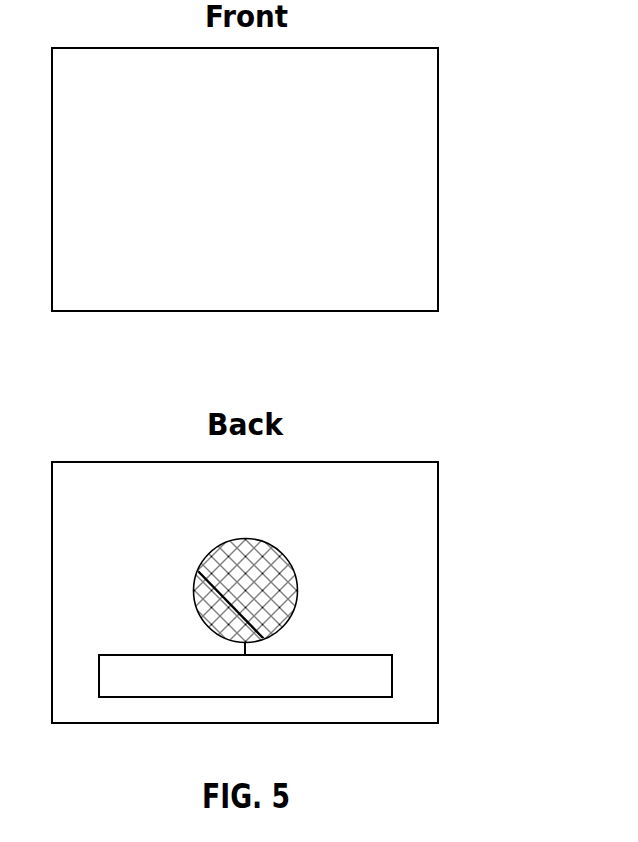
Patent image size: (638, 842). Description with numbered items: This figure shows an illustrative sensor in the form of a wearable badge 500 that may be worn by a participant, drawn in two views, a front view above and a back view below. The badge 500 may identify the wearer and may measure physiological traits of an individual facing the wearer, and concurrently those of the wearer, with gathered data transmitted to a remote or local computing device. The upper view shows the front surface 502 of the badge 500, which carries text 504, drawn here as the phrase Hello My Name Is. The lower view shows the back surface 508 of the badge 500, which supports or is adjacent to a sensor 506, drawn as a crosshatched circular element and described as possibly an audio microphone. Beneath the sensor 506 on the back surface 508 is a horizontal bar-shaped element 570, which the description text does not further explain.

The badge 500 is at (438, 173).
The front surface 502 is at (423, 278).
The text 504 is at (388, 88).
The sensor 506 is at (268, 573).
The back surface 508 is at (413, 503).
The magnetic bar 570 is at (392, 670).